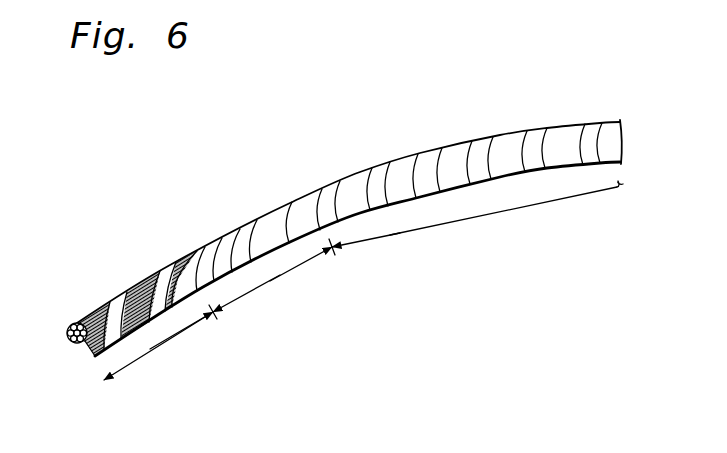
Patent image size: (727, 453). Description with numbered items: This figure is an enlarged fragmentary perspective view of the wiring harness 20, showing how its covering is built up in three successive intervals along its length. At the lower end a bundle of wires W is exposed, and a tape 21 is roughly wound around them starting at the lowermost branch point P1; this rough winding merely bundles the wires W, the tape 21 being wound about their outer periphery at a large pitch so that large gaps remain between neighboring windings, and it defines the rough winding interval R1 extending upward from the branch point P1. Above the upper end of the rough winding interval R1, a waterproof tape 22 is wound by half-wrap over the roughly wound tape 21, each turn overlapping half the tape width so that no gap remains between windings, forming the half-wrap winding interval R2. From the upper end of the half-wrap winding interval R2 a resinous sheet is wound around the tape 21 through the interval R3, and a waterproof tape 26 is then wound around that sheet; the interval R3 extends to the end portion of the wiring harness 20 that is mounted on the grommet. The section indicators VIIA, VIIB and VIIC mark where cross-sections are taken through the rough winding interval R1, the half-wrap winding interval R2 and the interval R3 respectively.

The wiring harness 20 is at (460, 142).
The tape 21 is at (137, 280).
The waterproof tape 22 is at (253, 266).
The waterproof tape 26 is at (537, 162).
The wires W is at (77, 344).
The lowermost branch point P1 is at (95, 362).
The rough winding interval R1 is at (145, 353).
The half-wrap winding interval R2 is at (300, 267).
The interval R3 is at (462, 221).
The section line VIIA is at (128, 269).
The section line VIIB is at (258, 198).
The section line VIIC is at (419, 147).